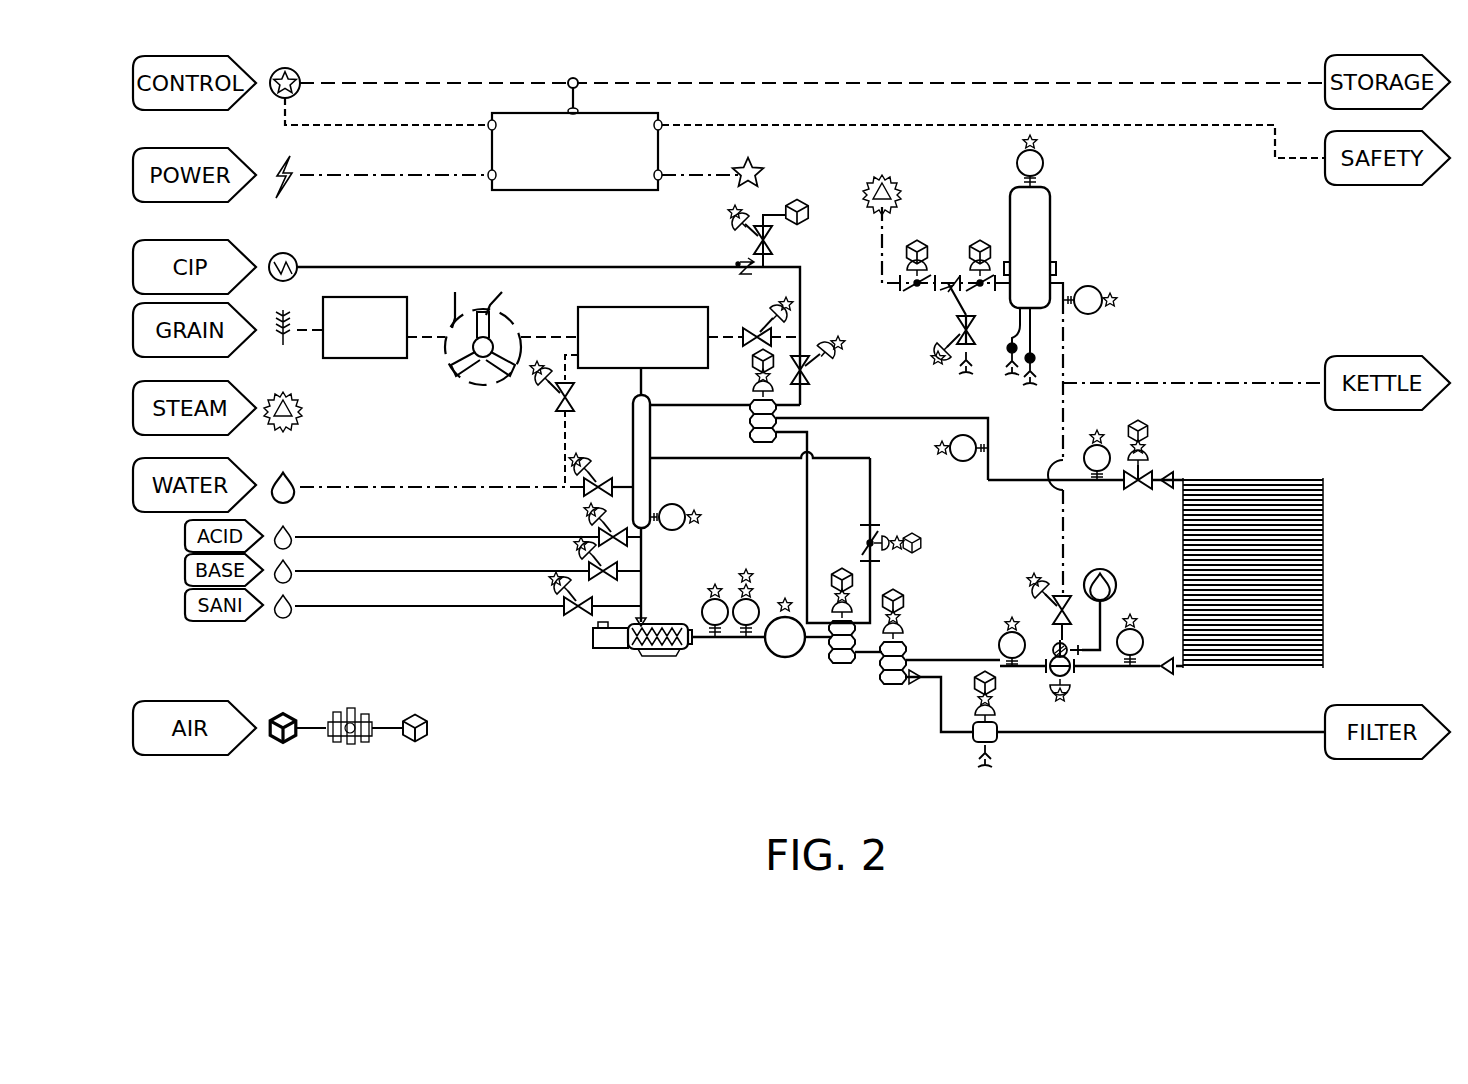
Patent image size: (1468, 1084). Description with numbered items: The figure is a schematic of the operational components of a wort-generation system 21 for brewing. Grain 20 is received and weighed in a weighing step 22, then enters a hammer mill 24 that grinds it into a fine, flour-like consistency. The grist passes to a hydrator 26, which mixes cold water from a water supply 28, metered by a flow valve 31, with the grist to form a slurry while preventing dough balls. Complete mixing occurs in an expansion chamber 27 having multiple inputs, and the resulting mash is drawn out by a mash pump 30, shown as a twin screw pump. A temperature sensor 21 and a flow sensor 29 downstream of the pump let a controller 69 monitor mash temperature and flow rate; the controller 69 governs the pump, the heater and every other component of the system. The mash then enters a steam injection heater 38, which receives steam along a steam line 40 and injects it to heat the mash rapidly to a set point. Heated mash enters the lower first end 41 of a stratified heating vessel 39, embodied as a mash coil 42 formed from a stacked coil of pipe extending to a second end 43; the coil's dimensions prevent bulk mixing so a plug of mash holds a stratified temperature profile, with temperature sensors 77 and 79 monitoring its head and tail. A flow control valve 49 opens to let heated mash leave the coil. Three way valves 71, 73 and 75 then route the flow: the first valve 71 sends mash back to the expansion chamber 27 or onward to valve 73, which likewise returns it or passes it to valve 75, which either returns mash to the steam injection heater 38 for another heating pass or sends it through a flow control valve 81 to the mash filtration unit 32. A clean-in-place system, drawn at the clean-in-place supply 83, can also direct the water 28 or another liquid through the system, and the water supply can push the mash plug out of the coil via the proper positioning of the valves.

The grain 20 is at (133, 330).
The temperature sensor 21 is at (703, 598).
The weighing step 22 is at (362, 358).
The hammer mill 24 is at (452, 362).
The hydrator 26 is at (645, 305).
The expansion chamber 27 is at (652, 488).
The water supply 28 is at (133, 495).
The flow sensor 29 is at (785, 657).
The mash pump 30 is at (662, 656).
The flow valve 31 is at (572, 388).
The mash filtration unit 32 is at (1380, 720).
The steam injection heater 38 is at (1055, 655).
The stratified heating vessel 39 is at (1302, 572).
The steam supply line 40 is at (1060, 540).
The first end 41 is at (1170, 675).
The mash coil 42 is at (1323, 530).
The second end 43 is at (1167, 490).
The flow control valve 49 is at (1150, 468).
The controller 69 is at (574, 190).
The first three way valve 71 is at (750, 422).
The three way valve 73 is at (842, 664).
The three way valve 75 is at (893, 686).
The temperature sensor 77 is at (1140, 632).
The temperature sensor 79 is at (1104, 445).
The flow control valve 81 is at (995, 745).
The CIP source 83 is at (292, 254).